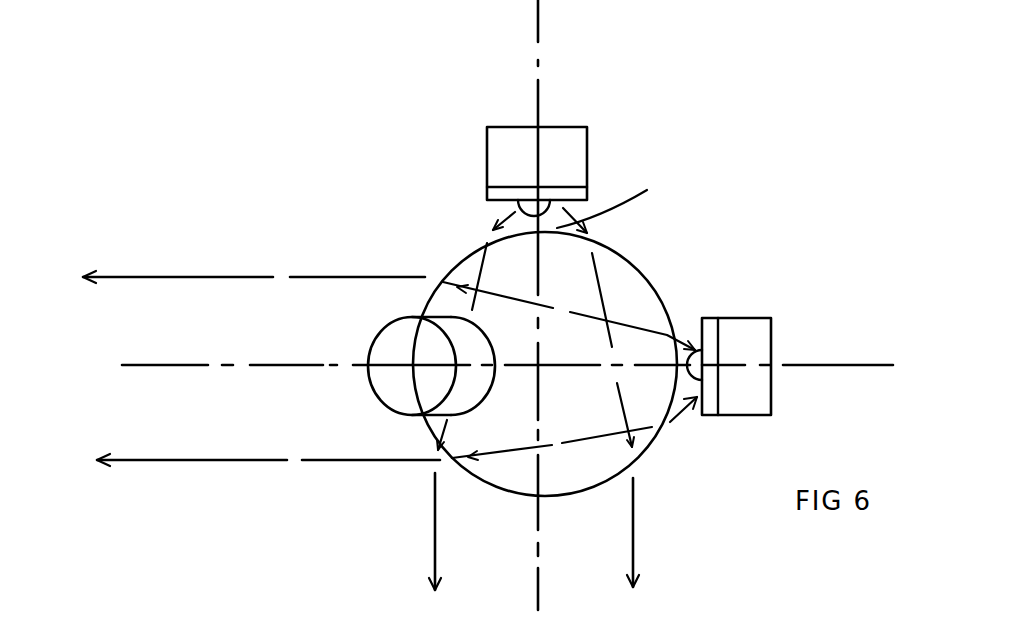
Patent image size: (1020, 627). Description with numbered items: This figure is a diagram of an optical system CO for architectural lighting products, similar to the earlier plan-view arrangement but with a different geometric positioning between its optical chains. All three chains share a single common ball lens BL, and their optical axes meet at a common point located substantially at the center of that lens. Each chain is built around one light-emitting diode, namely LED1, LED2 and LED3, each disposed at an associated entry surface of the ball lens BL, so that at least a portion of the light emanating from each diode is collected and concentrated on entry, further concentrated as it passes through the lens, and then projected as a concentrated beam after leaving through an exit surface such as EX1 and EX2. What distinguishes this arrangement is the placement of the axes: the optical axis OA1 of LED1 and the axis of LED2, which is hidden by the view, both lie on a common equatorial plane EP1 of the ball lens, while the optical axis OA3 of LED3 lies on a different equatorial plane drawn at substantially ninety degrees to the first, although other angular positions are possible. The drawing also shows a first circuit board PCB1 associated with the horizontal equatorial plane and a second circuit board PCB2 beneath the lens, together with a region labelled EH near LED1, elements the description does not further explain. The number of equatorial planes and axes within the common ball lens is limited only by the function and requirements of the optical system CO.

The optical axis OA3 is at (538, 82).
The optical axis OA1 is at (843, 365).
The ball lens BL is at (658, 283).
The optical system CO is at (817, 175).
The LED LED3 is at (540, 207).
The LED LED1 is at (700, 350).
The LED LED2 is at (553, 308).
The first printed circuit board PCB1 is at (212, 284).
The equatorial plane EP1 is at (265, 365).
The emission hemisphere EH is at (676, 393).
The exit surface EX1 is at (415, 423).
The exit surface EX2 is at (612, 480).
The second printed circuit board PCB2 is at (447, 528).